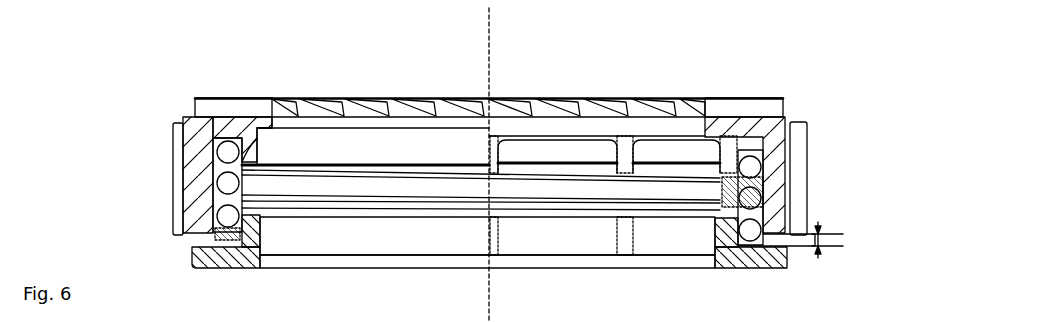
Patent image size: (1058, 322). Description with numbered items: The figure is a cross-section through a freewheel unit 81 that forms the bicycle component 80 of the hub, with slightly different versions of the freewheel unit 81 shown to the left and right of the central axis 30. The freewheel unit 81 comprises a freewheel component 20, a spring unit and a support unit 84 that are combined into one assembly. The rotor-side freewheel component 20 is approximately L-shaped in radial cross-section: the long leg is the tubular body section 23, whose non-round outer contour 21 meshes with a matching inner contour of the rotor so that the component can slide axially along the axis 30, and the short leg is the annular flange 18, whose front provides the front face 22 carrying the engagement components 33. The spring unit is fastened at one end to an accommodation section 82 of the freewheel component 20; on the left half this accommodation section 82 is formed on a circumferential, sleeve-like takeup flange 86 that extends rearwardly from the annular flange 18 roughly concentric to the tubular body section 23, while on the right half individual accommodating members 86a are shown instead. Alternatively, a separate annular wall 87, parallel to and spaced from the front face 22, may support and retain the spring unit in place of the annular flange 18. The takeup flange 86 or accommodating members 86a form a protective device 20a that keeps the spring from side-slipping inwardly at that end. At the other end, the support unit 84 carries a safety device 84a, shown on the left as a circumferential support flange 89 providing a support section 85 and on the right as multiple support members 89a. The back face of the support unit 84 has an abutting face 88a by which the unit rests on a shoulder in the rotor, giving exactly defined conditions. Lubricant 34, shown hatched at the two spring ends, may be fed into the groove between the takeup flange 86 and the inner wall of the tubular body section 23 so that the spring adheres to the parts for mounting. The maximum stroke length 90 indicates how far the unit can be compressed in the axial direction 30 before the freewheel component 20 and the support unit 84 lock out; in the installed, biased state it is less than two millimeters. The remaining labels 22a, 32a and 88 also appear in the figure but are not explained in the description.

The bicycle component 80 is at (122, 92).
The freewheel unit 81 is at (790, 113).
The annular flange 18 is at (218, 125).
The freewheel component 20 is at (197, 128).
The protective device 20a is at (262, 153).
The non-round outer contour 21 is at (181, 222).
The front face 22 is at (367, 90).
The rack end portion 22a is at (752, 143).
The tubular body section 23 is at (195, 193).
The central axis 30 is at (490, 76).
The leaf spring 32a is at (213, 152).
The engagement components 33 is at (448, 100).
The lubricant 34 is at (220, 157).
The accommodation section 82 is at (250, 147).
The support unit 84 is at (172, 258).
The safety device 84a is at (265, 229).
The support section 85 is at (262, 232).
The takeup flange 86 is at (253, 148).
The accommodating members 86a is at (732, 157).
The annular wall 87 is at (757, 182).
The foot block 88 is at (218, 262).
The abutting face 88a is at (762, 270).
The support flange 89 is at (702, 237).
The support members 89a is at (497, 227).
The stroke length 90 is at (827, 240).